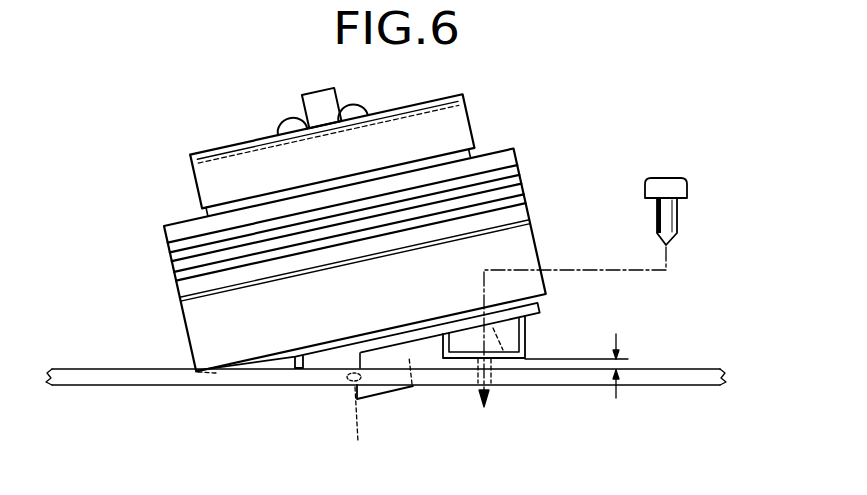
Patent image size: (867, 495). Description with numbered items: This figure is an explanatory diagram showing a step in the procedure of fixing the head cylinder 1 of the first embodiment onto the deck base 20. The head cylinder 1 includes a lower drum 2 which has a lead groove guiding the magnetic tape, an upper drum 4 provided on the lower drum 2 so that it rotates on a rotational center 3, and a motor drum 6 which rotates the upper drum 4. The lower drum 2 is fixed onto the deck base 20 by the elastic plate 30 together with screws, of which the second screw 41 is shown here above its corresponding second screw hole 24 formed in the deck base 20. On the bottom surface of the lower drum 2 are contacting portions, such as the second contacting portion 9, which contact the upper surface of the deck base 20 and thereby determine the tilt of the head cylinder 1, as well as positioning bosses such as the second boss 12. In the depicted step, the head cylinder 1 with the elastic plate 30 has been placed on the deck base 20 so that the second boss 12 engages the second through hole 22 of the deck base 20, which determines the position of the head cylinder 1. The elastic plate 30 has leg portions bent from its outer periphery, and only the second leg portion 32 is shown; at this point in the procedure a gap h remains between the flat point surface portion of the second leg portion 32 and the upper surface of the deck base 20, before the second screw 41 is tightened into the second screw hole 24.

The head cylinder 1 is at (371, 220).
The lower drum 2 is at (355, 260).
The upper drum 4 is at (347, 223).
The motor drum 6 is at (330, 139).
The elastic plate 30 is at (368, 341).
The second contacting portion 9 is at (337, 368).
The second through hole 22 is at (352, 377).
The second boss 12 is at (357, 432).
The rotational center 3 is at (387, 395).
The second leg portion 32 is at (455, 362).
The second screw hole 24 is at (493, 383).
The deck base 20 is at (703, 375).
The second screw 41 is at (667, 190).
The gap h is at (576, 354).